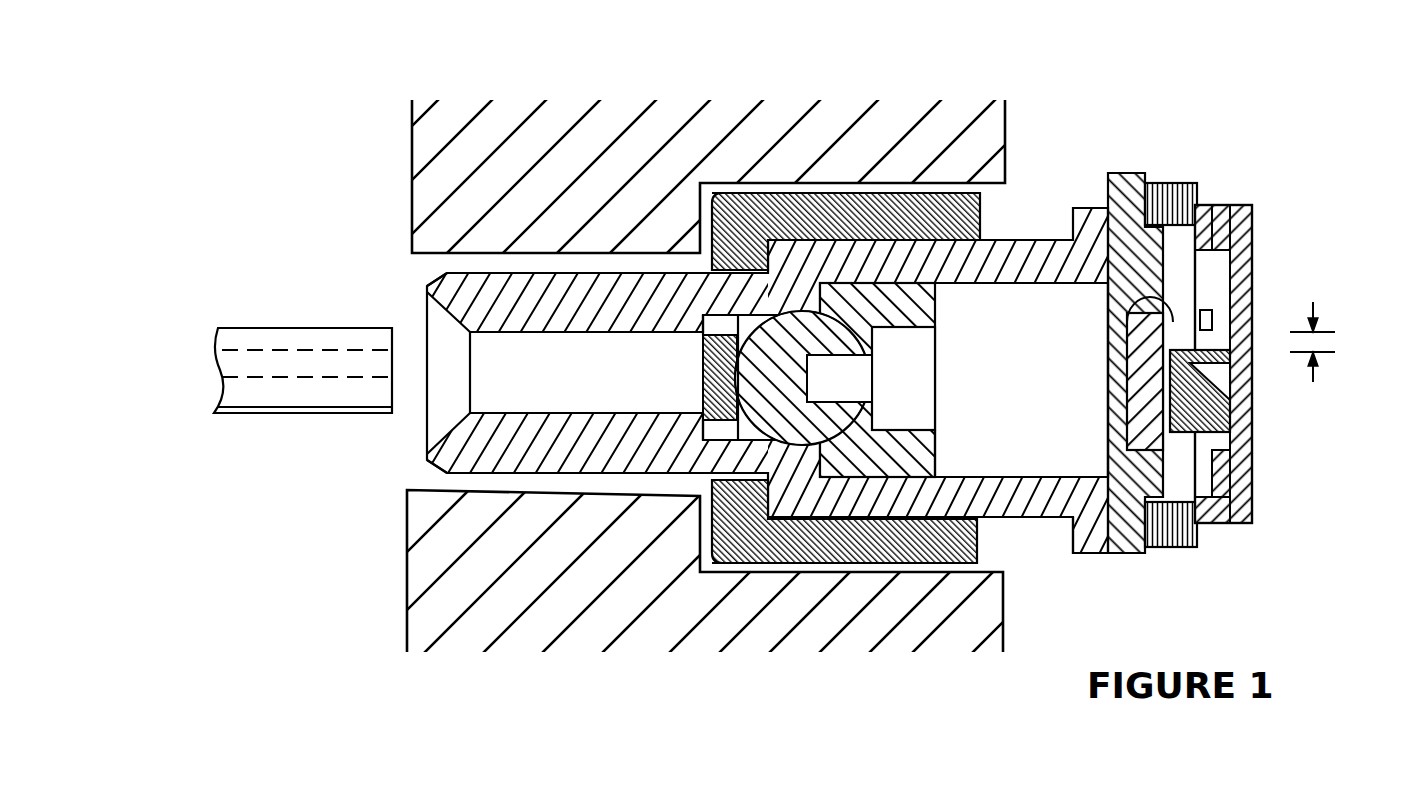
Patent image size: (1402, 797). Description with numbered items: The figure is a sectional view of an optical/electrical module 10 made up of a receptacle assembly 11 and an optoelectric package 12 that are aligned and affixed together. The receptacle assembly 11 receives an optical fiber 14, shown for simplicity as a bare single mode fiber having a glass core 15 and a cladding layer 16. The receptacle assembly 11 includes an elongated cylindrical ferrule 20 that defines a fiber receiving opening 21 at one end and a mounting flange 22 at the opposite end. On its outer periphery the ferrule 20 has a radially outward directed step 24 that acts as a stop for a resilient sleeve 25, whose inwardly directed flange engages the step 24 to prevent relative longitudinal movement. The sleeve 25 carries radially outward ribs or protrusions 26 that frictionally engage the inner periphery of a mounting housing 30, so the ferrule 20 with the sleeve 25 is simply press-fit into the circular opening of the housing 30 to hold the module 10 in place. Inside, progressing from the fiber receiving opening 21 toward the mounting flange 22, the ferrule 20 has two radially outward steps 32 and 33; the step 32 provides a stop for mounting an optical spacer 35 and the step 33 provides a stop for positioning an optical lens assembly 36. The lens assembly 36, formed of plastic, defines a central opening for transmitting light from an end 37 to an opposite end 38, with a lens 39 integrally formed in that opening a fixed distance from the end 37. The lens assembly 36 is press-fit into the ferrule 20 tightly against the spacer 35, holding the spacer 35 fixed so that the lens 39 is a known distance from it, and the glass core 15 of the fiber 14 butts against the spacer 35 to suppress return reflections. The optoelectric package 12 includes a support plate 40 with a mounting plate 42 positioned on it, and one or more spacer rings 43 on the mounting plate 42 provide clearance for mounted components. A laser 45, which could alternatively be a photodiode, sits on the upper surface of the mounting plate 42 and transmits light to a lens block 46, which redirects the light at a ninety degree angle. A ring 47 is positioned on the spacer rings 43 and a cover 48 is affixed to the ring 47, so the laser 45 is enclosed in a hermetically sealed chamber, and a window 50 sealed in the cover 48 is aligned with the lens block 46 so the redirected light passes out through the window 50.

The module 10 is at (689, 355).
The receptacle assembly 11 is at (789, 355).
The optoelectric package 12 is at (1182, 294).
The optical fiber 14 is at (303, 295).
The glass core 15 is at (248, 352).
The cladding layer 16 is at (340, 343).
The ferrule 20 is at (789, 390).
The fiber receiving opening 21 is at (440, 413).
The mounting flange 22 is at (1090, 553).
The step 24 is at (763, 184).
The resilient sleeve 25 is at (978, 537).
The ribs or protrusions 26 is at (907, 186).
The mounting housing 30 is at (622, 163).
The step 32 is at (700, 420).
The step 33 is at (872, 418).
The optical spacer 35 is at (700, 355).
The optical lens assembly 36 is at (920, 315).
The end 37 is at (765, 377).
The end 38 is at (935, 447).
The lens 39 is at (805, 380).
The support plate 40 is at (1253, 252).
The mounting plate 42 is at (1223, 207).
The spacer rings 43 is at (1206, 205).
The laser 45 is at (1253, 304).
The lens block 46 is at (1253, 418).
The ring 47 is at (1163, 182).
The cover 48 is at (1112, 175).
The window 50 is at (1127, 305).